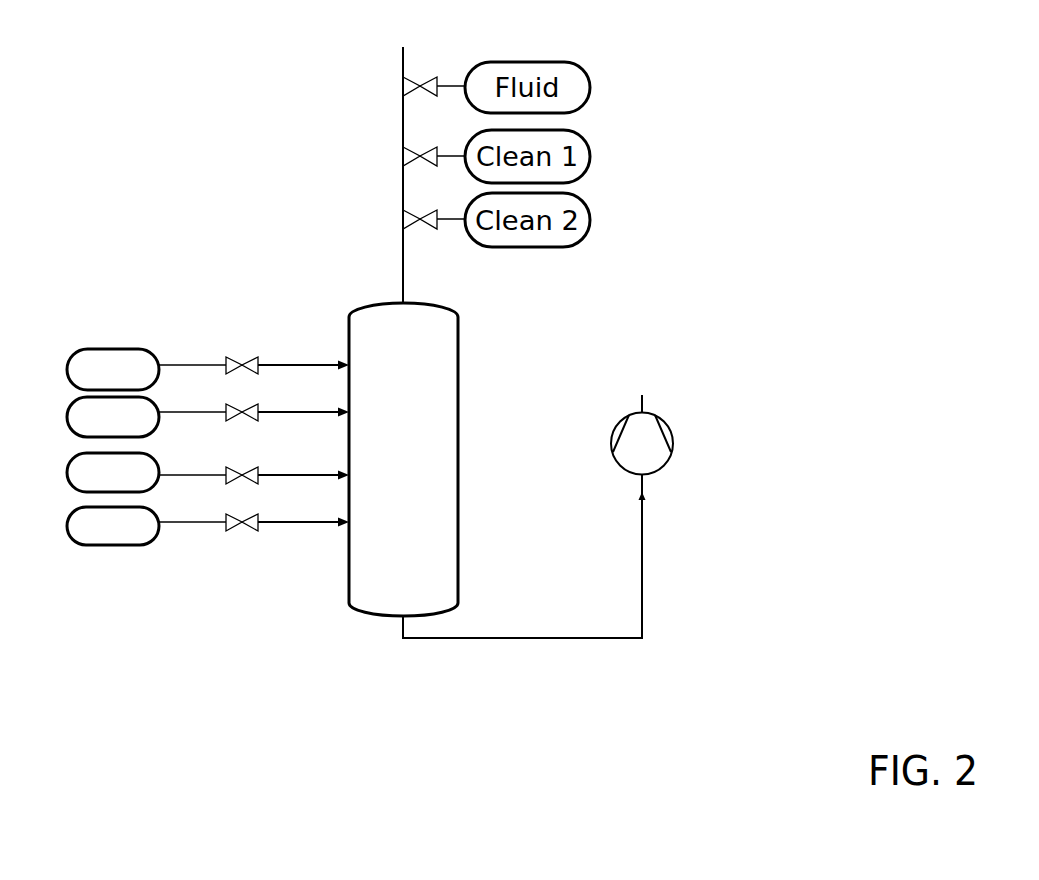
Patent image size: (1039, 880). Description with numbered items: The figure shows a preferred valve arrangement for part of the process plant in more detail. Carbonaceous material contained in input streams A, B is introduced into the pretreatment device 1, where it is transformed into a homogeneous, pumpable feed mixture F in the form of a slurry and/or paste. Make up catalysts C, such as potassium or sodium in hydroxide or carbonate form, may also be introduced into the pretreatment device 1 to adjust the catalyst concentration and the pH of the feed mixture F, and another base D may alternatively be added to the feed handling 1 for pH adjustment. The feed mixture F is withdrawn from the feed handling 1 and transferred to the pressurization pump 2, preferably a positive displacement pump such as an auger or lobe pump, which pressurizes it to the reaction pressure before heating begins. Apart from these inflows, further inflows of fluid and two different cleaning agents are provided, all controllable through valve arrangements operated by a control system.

The pretreatment device 1 is at (442, 459).
The pressurization pump 2 is at (673, 443).
The input stream A is at (208, 369).
The input stream B is at (208, 417).
The make up catalysts C is at (208, 472).
The base D is at (208, 526).
The feed mixture F is at (403, 435).